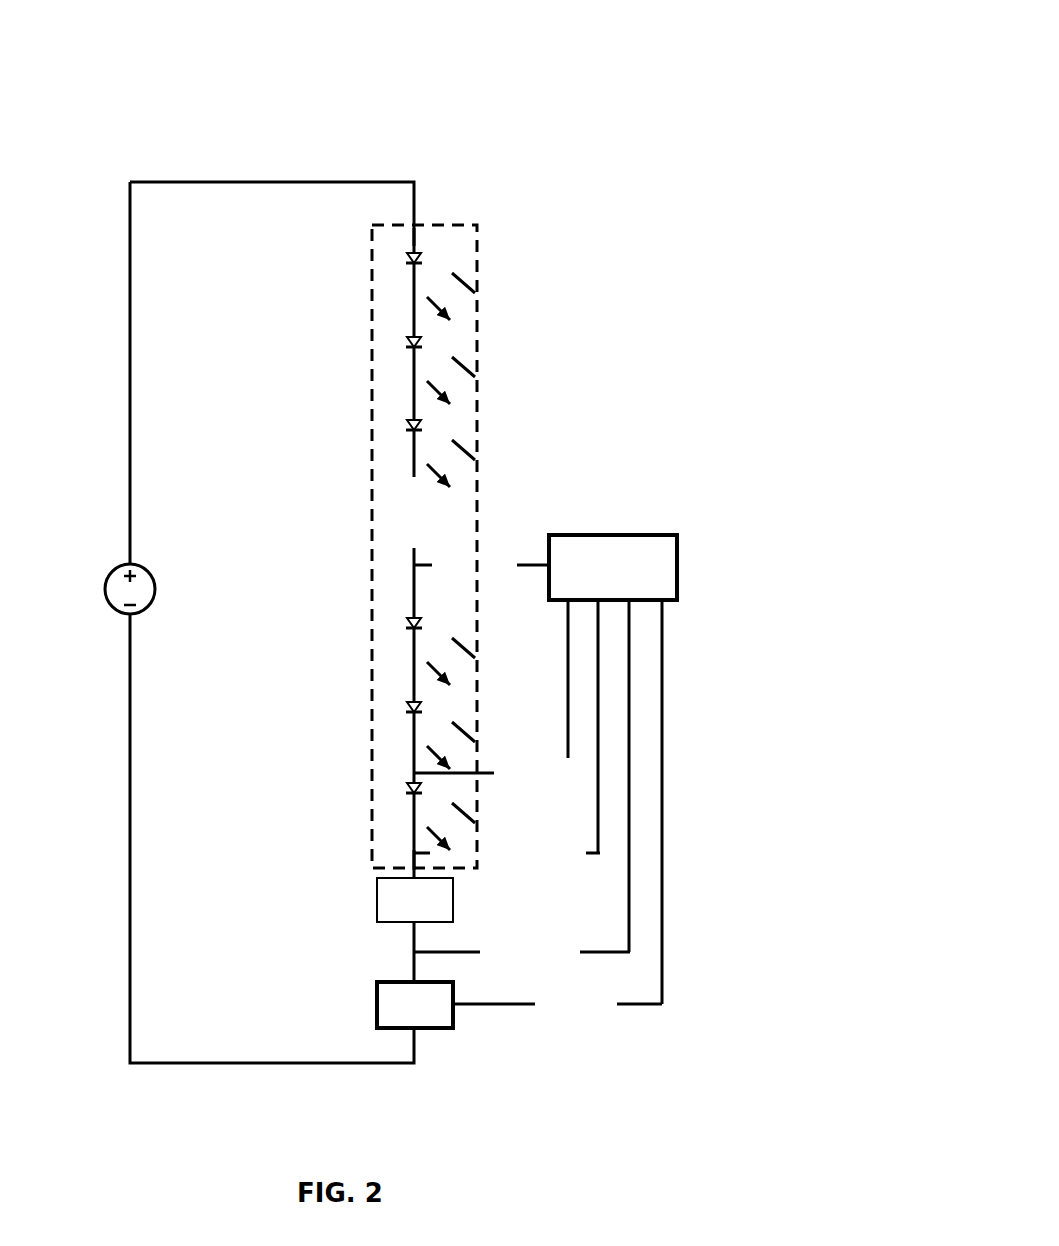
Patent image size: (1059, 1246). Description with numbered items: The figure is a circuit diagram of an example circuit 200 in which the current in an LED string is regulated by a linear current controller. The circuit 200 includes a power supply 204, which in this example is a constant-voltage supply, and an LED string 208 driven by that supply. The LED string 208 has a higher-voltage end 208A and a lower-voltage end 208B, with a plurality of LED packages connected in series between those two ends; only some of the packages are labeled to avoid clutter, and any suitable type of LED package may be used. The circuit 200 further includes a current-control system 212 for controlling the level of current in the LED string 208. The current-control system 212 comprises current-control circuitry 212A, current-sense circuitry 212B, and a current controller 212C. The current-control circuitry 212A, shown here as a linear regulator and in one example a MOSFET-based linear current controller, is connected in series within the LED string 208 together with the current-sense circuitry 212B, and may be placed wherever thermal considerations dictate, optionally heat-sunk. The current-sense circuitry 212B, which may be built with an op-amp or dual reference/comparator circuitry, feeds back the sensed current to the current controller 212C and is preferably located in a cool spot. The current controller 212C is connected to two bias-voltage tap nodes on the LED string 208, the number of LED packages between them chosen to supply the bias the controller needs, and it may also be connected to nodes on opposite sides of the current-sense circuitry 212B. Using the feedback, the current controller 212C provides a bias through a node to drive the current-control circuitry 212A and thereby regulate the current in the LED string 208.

The circuit 200 is at (588, 83).
The power supply 204 is at (135, 563).
The LED string 208 is at (486, 220).
The higher-voltage end 208A is at (407, 240).
The lower-voltage end 208B is at (404, 836).
The current-control system 212 is at (547, 747).
The current-control circuitry 212A is at (415, 1005).
The current-sense circuitry 212B is at (377, 898).
The current controller 212C is at (633, 535).